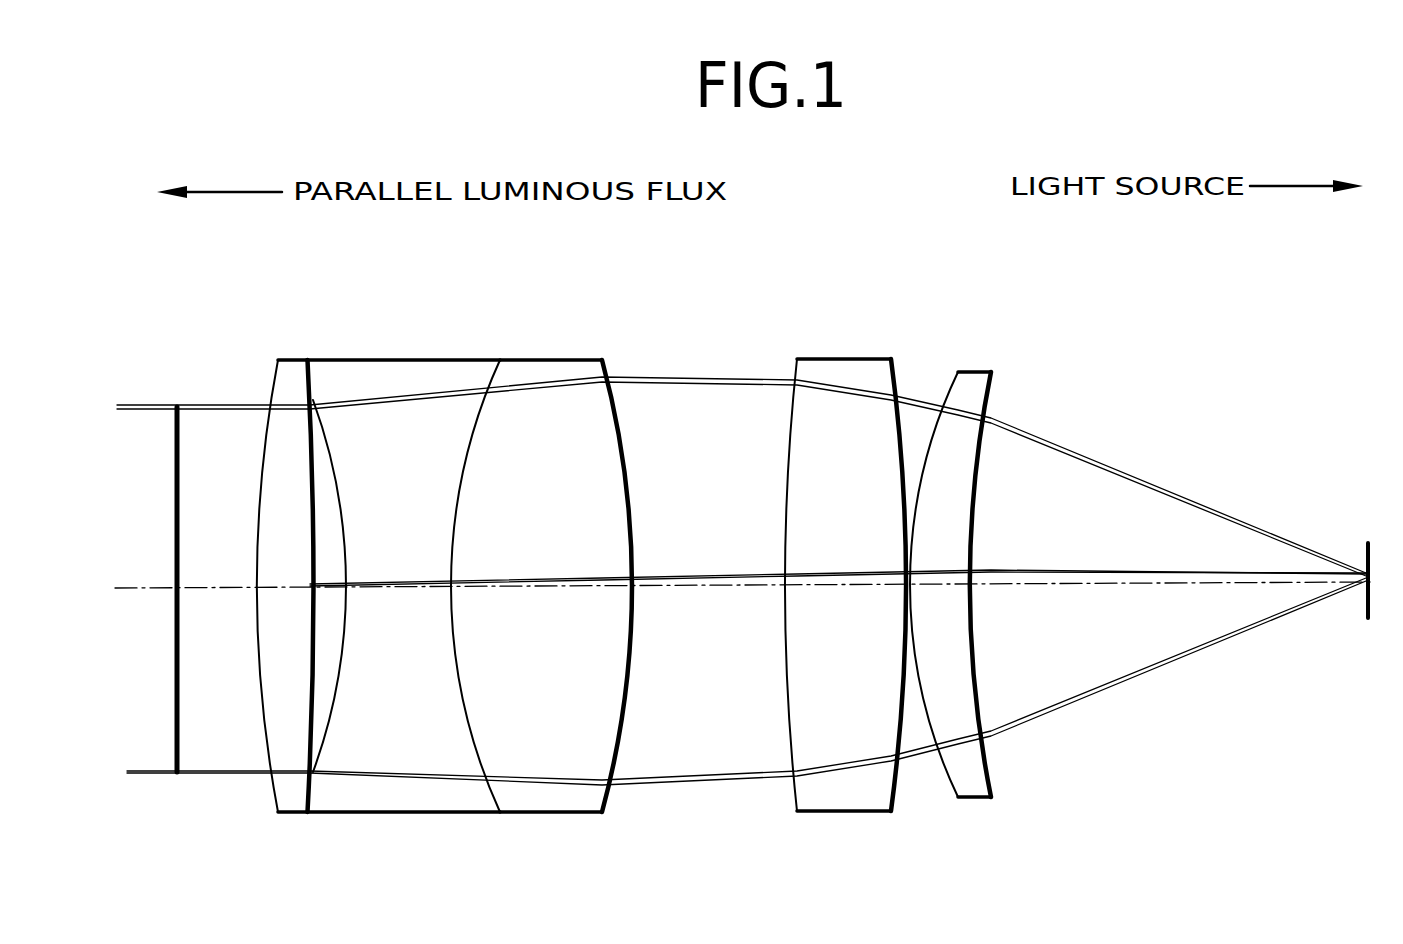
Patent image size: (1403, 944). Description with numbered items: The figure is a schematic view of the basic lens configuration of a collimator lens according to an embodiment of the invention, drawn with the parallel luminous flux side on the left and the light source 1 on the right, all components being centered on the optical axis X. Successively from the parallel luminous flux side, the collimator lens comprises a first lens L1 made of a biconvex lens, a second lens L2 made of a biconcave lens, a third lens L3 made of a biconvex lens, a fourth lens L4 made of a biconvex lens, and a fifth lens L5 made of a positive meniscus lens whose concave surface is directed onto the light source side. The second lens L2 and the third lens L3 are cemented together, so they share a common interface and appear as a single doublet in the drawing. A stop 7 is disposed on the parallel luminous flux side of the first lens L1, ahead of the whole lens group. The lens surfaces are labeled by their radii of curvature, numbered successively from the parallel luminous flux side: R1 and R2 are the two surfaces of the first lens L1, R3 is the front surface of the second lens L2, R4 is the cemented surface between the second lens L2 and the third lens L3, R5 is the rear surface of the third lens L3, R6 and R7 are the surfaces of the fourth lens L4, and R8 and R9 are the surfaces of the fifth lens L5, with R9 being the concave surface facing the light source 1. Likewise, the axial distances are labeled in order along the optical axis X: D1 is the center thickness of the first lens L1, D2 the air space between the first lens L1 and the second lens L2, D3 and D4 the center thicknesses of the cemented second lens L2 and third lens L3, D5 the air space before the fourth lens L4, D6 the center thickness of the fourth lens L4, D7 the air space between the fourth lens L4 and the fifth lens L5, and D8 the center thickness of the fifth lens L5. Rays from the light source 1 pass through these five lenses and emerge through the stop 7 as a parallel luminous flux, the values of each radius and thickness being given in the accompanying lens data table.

The light source 1 is at (1371, 600).
The stop 7 is at (175, 475).
The optical axis X is at (217, 592).
The first lens L1 is at (304, 546).
The second lens L2 is at (403, 573).
The third lens L3 is at (578, 573).
The fourth lens L4 is at (824, 572).
The fifth lens L5 is at (988, 577).
The radius of curvature of first lens surface R1 is at (263, 713).
The radius of curvature of second lens surface R2 is at (314, 670).
The radius of curvature of third lens surface R3 is at (330, 703).
The radius of curvature of fourth lens surface R4 is at (475, 752).
The radius of curvature of fifth lens surface R5 is at (616, 760).
The radius of curvature of sixth lens surface R6 is at (790, 752).
The radius of curvature of seventh lens surface R7 is at (899, 786).
The radius of curvature of eighth lens surface R8 is at (949, 780).
The radius of curvature of ninth lens surface R9 is at (987, 768).
The center thickness of first lens D1 is at (287, 587).
The air space between first and second lenses D2 is at (329, 587).
The center thickness of second lens D3 is at (398, 587).
The center thickness of third lens D4 is at (542, 587).
The air space between third and fourth lenses D5 is at (709, 586).
The center thickness of fourth lens D6 is at (858, 585).
The air space between fourth and fifth lenses D7 is at (910, 582).
The center thickness of fifth lens D8 is at (940, 582).